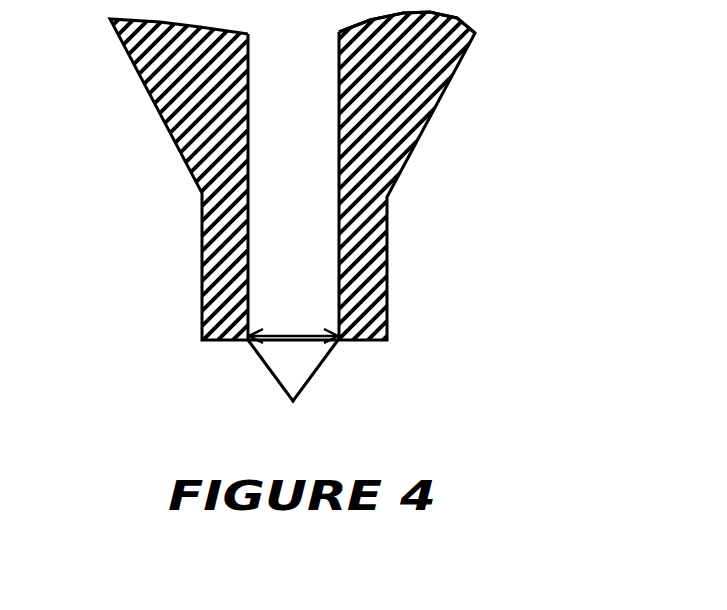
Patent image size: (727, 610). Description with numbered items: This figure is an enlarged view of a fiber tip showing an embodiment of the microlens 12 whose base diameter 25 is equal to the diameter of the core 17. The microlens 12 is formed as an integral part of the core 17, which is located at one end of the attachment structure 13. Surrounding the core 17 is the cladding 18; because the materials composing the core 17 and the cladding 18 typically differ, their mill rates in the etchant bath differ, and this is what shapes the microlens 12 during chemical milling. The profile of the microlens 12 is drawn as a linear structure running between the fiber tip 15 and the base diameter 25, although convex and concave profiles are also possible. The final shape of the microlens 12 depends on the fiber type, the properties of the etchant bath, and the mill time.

The microlens 12 is at (267, 380).
The attachment structure 13 is at (393, 287).
The fiber tip 15 is at (293, 403).
The core 17 is at (263, 178).
The cladding 18 is at (413, 43).
The base diameter 25 is at (290, 335).